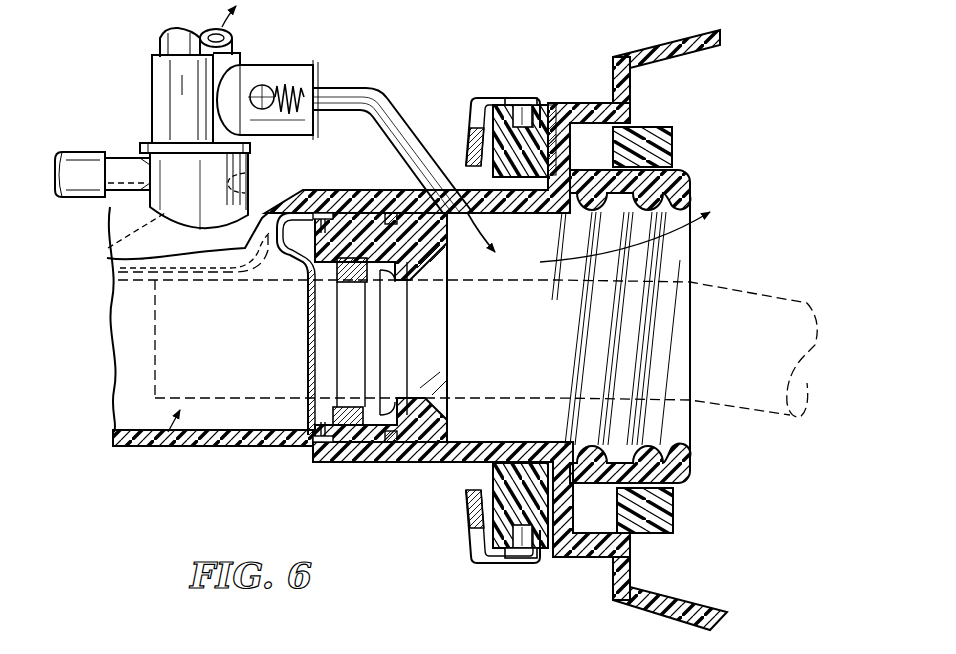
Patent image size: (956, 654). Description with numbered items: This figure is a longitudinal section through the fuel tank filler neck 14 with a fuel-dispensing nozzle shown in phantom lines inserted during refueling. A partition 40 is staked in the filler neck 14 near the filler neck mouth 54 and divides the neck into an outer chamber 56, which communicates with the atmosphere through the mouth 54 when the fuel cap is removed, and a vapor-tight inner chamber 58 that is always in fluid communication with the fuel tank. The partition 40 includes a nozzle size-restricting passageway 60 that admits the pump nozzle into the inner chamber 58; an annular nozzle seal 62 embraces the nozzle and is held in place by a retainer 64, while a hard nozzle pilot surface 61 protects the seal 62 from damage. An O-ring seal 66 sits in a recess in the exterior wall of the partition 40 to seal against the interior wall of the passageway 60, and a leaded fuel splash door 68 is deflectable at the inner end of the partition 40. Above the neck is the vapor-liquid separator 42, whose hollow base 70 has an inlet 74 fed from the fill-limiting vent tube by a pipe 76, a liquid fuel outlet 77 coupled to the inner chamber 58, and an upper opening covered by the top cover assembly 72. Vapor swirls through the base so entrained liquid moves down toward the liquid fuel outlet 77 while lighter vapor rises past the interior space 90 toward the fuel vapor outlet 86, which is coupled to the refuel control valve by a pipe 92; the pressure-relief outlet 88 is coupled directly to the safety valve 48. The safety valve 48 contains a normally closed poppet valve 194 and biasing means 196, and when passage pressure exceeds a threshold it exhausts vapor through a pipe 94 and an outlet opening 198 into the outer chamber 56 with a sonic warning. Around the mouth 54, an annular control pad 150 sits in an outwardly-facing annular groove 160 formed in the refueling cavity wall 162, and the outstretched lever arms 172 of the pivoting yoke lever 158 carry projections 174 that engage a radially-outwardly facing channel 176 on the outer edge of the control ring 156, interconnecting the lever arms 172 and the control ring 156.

The filler neck 14 is at (118, 446).
The partition 40 is at (402, 327).
The vapor-liquid separator 42 is at (167, 118).
The safety valve 48 is at (292, 91).
The filler neck mouth 54 is at (670, 462).
The outer chamber 56 is at (492, 430).
The inner chamber 58 is at (160, 448).
The nozzle size-restricting passageway 60 is at (445, 405).
The hard nozzle pilot surface 61 is at (432, 250).
The annular nozzle seal 62 is at (388, 285).
The retainer 64 is at (352, 428).
The O-ring seal 66 is at (389, 212).
The leaded fuel splash door 68 is at (125, 271).
The base 70 is at (215, 200).
The top cover assembly 72 is at (148, 104).
The inlet 74 is at (123, 165).
The pipe 76 is at (73, 182).
The liquid fuel outlet 77 is at (252, 183).
The fuel vapor outlet 86 is at (176, 68).
The pressure-relief outlet 88 is at (318, 78).
The interior space 90 is at (107, 249).
The pipe 92 is at (233, 40).
The pipe 94 is at (372, 100).
The annular control pad 150 is at (668, 140).
The control ring 156 is at (546, 106).
The yoke lever 158 is at (477, 317).
The annular groove 160 is at (645, 125).
The refueling cavity wall 162 is at (680, 52).
The lever arms 172 is at (465, 118).
The projections 174 is at (527, 110).
The channel 176 is at (488, 118).
The poppet valve 194 is at (268, 112).
The biasing means 196 is at (316, 127).
The outlet opening 198 is at (497, 232).